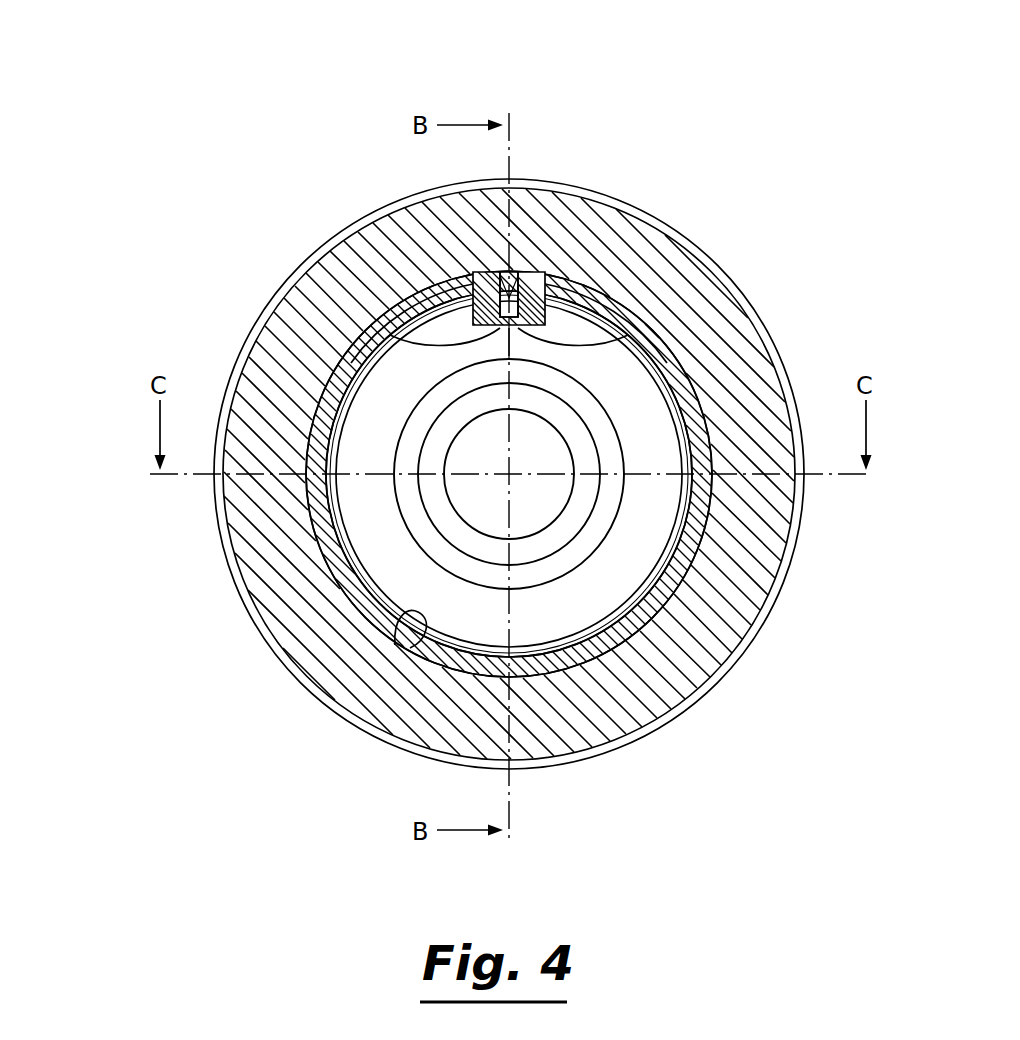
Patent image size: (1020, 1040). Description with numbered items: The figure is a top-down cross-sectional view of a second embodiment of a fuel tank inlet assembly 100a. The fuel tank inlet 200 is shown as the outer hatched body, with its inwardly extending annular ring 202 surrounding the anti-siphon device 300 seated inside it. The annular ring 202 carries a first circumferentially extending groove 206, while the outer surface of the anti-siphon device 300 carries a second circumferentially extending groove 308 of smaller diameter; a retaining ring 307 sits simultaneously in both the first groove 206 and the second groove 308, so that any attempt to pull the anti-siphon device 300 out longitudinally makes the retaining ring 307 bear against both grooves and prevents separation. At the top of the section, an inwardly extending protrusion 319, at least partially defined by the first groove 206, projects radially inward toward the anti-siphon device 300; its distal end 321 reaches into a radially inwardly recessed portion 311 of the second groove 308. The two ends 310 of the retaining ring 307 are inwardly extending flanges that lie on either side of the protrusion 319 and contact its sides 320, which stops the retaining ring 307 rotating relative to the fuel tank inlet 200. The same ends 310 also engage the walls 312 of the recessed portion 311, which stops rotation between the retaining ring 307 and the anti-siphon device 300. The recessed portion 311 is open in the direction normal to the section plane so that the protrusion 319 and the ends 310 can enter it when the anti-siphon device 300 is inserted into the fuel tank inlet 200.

The fuel tank inlet assembly 100a is at (192, 112).
The fuel tank inlet 200 is at (428, 716).
The annular ring 202 is at (290, 583).
The first groove 206 is at (362, 618).
The anti-siphon device 300 is at (596, 594).
The retaining ring 307 is at (693, 540).
The second groove 308 is at (395, 645).
The ends of the retaining ring 310 is at (458, 284).
The recessed portion 311 is at (626, 328).
The walls 312 is at (425, 305).
The inwardly extending protrusion 319 is at (503, 268).
The sides 320 is at (478, 268).
The distal end 321 is at (385, 332).